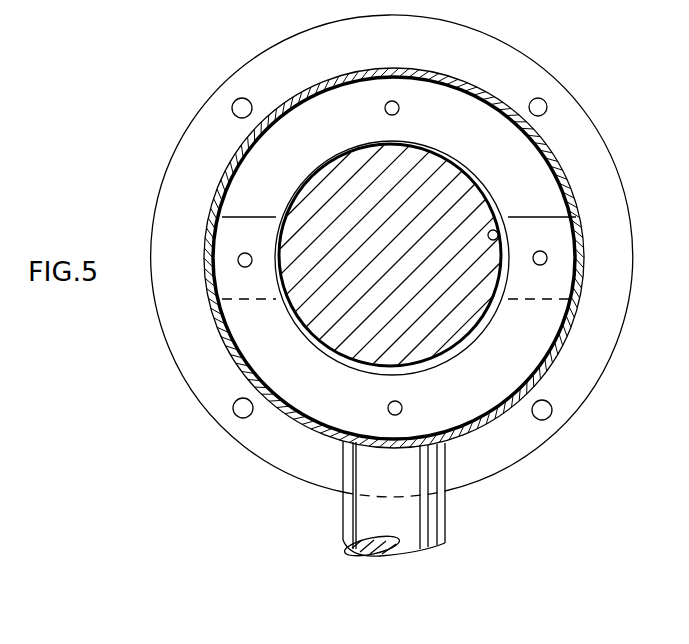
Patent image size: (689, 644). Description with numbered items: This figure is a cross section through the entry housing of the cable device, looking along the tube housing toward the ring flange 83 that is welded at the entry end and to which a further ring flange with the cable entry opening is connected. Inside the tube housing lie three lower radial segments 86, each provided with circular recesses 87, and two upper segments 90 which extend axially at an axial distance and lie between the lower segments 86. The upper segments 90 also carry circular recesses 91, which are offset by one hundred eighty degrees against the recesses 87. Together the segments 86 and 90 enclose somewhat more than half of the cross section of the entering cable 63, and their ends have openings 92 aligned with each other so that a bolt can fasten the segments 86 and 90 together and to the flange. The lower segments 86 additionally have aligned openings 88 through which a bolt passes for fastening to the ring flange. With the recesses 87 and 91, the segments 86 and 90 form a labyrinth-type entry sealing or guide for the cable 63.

The ring flange 83 is at (530, 84).
The upper segments 90 is at (518, 161).
The lower radial segments 86 is at (537, 336).
The circular recesses 87 is at (457, 360).
The circular recesses 91 is at (425, 146).
The cable 63 is at (494, 240).
The openings 92 is at (548, 259).
The openings 88 is at (390, 412).